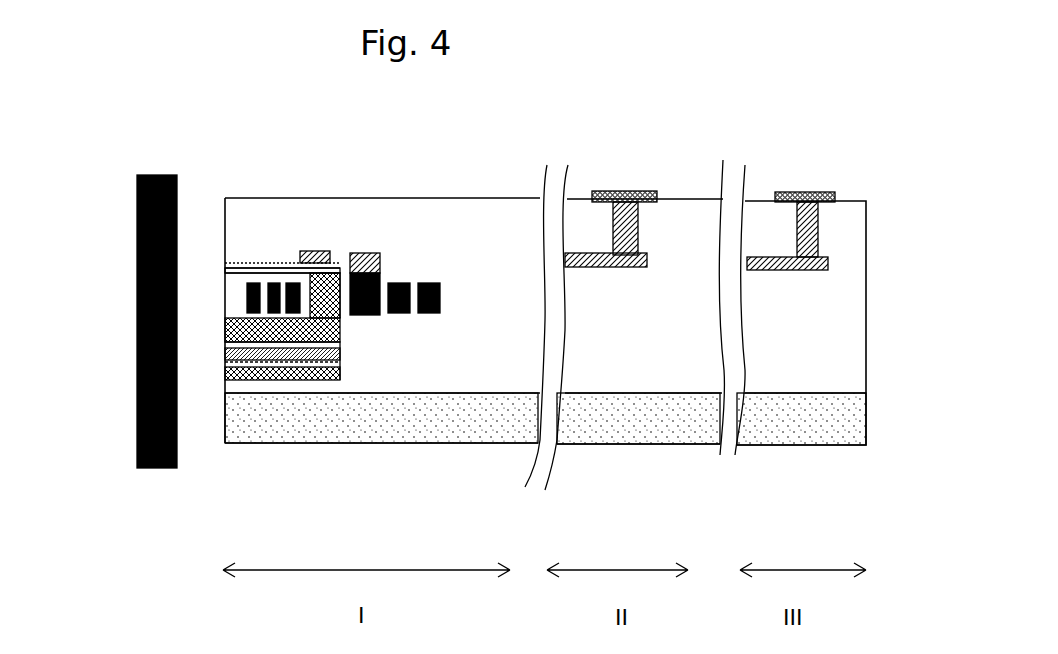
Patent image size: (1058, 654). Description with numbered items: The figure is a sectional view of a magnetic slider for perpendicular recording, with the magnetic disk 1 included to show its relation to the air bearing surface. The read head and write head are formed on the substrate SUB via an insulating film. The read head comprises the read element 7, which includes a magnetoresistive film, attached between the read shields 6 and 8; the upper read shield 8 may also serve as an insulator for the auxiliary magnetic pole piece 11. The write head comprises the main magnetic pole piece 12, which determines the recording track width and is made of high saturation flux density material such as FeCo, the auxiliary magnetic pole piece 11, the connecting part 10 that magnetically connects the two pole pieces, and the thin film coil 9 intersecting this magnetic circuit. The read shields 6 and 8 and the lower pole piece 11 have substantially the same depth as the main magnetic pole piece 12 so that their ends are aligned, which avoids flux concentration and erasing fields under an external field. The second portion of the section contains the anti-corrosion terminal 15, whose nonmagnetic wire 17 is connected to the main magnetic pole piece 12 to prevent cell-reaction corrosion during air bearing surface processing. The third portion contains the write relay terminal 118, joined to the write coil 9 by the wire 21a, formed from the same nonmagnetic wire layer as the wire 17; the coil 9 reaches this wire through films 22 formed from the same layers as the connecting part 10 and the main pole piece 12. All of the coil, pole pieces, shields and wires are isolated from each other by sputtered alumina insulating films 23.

The magnetic disk 1 is at (136, 376).
The read shield 6 is at (317, 373).
The read element 7 is at (238, 362).
The upper read shield 8 is at (278, 355).
The thin film coil 9 is at (245, 268).
The connecting part 10 is at (331, 284).
The auxiliary magnetic pole piece 11 is at (331, 330).
The main magnetic pole piece 12 is at (273, 266).
The anti-corrosion terminal 15 is at (638, 195).
The wire 17 is at (597, 255).
The wire 21a is at (370, 253).
The films 22 is at (377, 275).
The insulating films 23 is at (622, 357).
The write relay terminal 118 is at (817, 195).
The substrate SUB is at (488, 410).